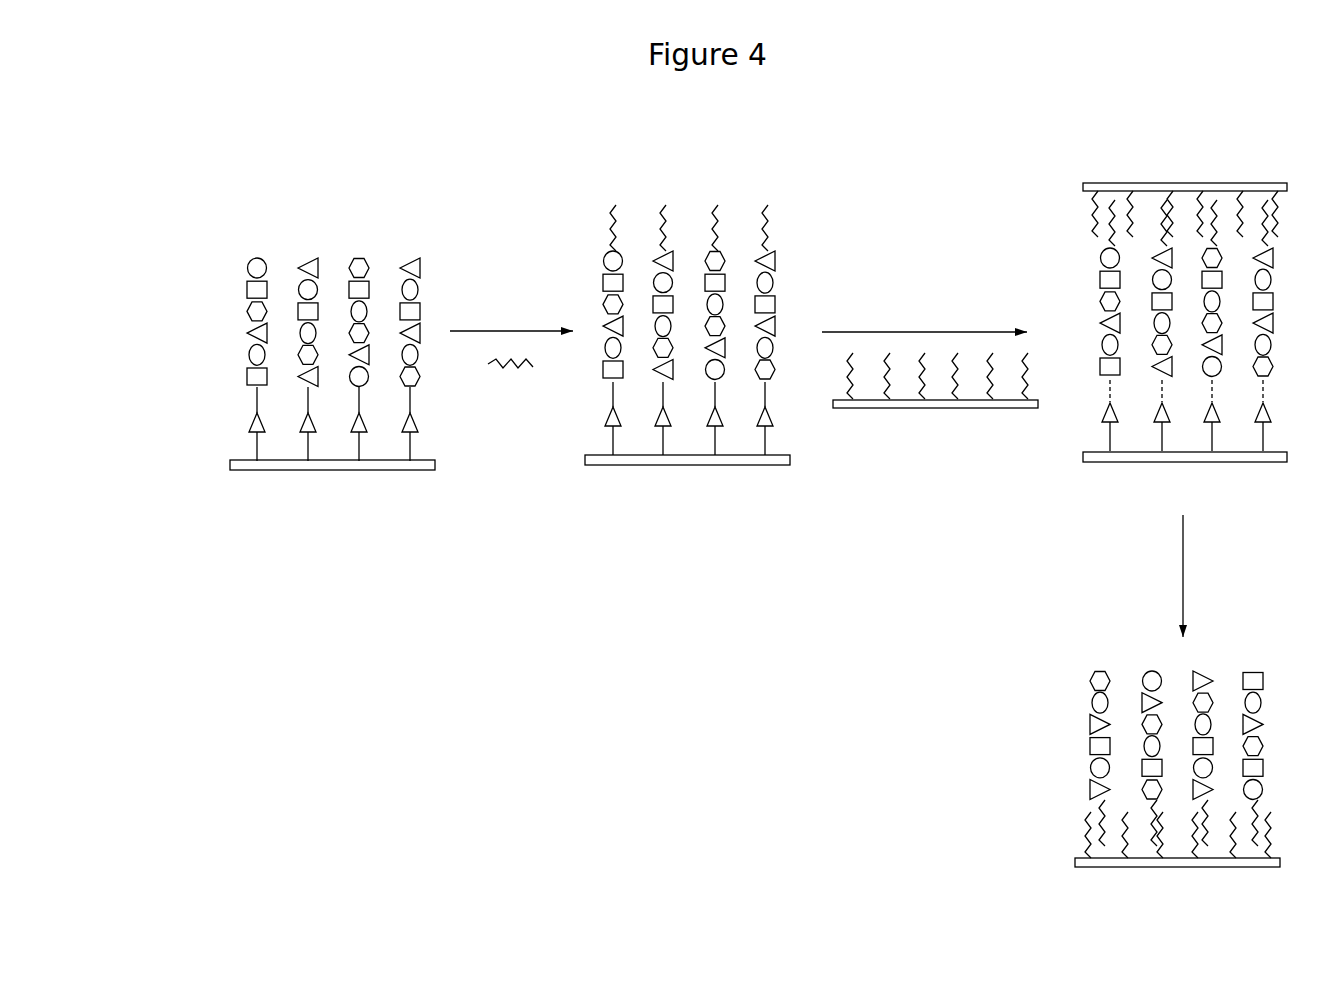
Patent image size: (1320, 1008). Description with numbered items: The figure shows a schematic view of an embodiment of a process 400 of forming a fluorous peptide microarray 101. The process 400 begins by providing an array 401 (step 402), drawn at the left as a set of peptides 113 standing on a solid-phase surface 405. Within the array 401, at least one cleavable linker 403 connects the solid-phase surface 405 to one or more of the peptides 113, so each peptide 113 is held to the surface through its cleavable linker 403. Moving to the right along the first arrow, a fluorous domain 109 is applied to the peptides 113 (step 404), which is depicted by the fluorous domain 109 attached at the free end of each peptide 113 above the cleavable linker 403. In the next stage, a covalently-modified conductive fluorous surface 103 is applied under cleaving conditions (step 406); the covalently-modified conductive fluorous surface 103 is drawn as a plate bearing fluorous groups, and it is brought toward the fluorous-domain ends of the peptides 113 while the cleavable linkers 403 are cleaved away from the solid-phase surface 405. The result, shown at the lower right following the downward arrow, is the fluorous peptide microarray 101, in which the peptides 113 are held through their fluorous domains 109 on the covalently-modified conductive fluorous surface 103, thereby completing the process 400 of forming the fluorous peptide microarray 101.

The process 400 is at (290, 788).
The array 401 is at (220, 340).
The step of providing the array 402 is at (312, 530).
The cleavable linker 403 is at (253, 420).
The step of applying the fluorous domain 404 is at (473, 267).
The solid-phase surface 405 is at (322, 472).
The step of applying the covalently-modified conductive fluorous surface 406 is at (902, 268).
The fluorous domain 109 is at (520, 382).
The peptide 113 is at (262, 238).
The covalently-modified conductive fluorous surface 103 is at (972, 430).
The fluorous peptide microarray 101 is at (1225, 153).